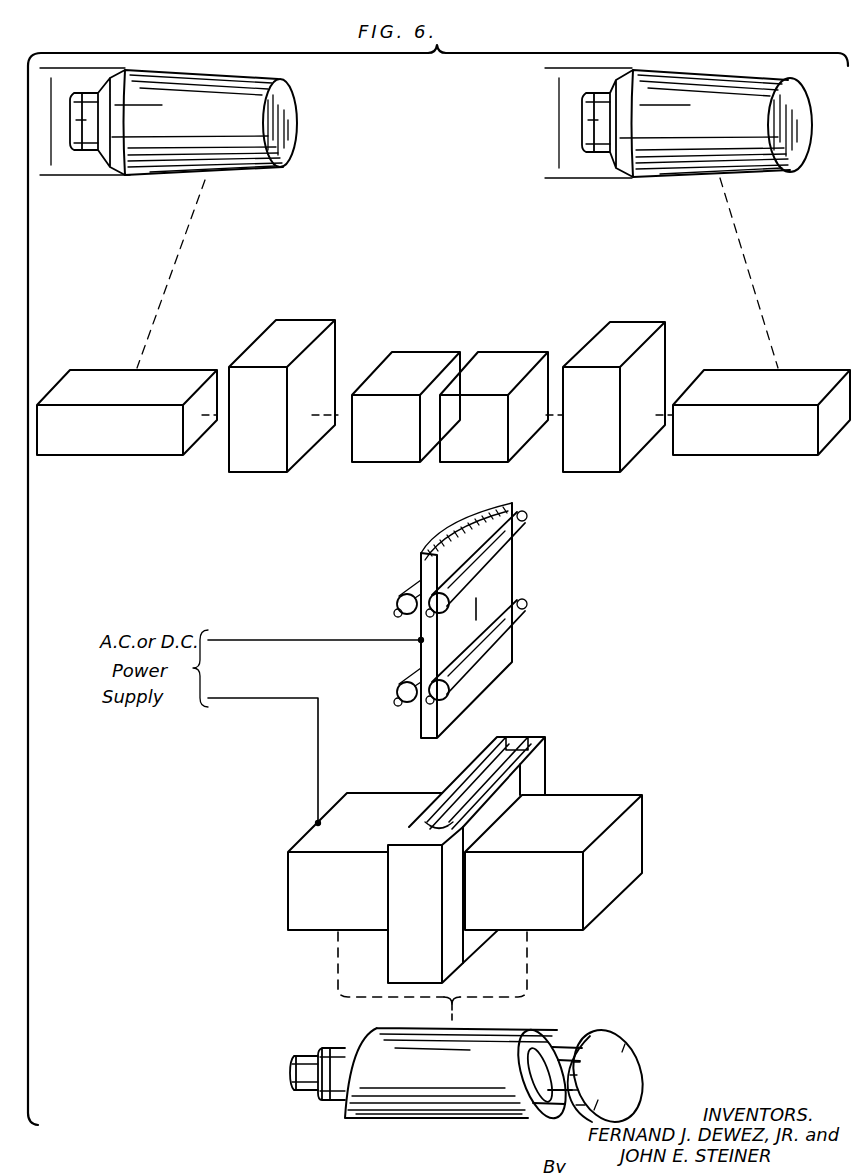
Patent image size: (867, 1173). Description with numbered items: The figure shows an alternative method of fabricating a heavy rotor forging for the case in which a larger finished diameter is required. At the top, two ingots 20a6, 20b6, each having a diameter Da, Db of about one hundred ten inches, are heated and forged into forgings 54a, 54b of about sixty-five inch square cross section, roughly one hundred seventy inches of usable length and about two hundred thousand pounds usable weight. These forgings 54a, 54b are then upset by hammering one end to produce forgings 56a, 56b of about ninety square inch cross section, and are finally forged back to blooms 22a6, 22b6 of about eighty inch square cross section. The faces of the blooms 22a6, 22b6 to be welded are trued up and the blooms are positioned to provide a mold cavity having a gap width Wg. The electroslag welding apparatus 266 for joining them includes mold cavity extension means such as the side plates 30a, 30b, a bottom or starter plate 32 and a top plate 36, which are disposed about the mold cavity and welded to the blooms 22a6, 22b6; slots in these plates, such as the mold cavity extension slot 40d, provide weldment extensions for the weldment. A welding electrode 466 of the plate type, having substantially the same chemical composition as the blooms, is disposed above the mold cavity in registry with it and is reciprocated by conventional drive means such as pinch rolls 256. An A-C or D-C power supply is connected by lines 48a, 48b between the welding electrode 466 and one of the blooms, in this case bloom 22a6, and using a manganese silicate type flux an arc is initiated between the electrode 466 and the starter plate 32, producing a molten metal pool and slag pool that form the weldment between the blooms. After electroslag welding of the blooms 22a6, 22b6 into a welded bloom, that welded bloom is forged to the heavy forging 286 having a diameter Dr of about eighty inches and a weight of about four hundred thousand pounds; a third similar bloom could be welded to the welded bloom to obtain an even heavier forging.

The ingot 20a6 is at (296, 127).
The ingot 20b6 is at (797, 152).
The diameter Da is at (83, 121).
The diameter Db is at (588, 123).
The forging 54a is at (77, 458).
The forging 54b is at (792, 458).
The forging 56a is at (257, 473).
The forging 56b is at (602, 475).
The bloom 22a6 is at (378, 460).
The bloom 22b6 is at (500, 356).
The welding electrode 466 is at (515, 565).
The pinch rolls 256 is at (412, 583).
The electroslag welding apparatus 266 is at (568, 672).
The line 48a is at (237, 698).
The line 48b is at (237, 640).
The side plate 30a is at (460, 886).
The side plate 30b is at (545, 758).
The top plate 36 is at (425, 807).
The mold cavity extension slot 40d is at (420, 823).
The gap width Wg is at (500, 782).
The bottom plate 32 is at (497, 934).
The heavy forging 286 is at (438, 1122).
The diameter Dr is at (608, 1076).